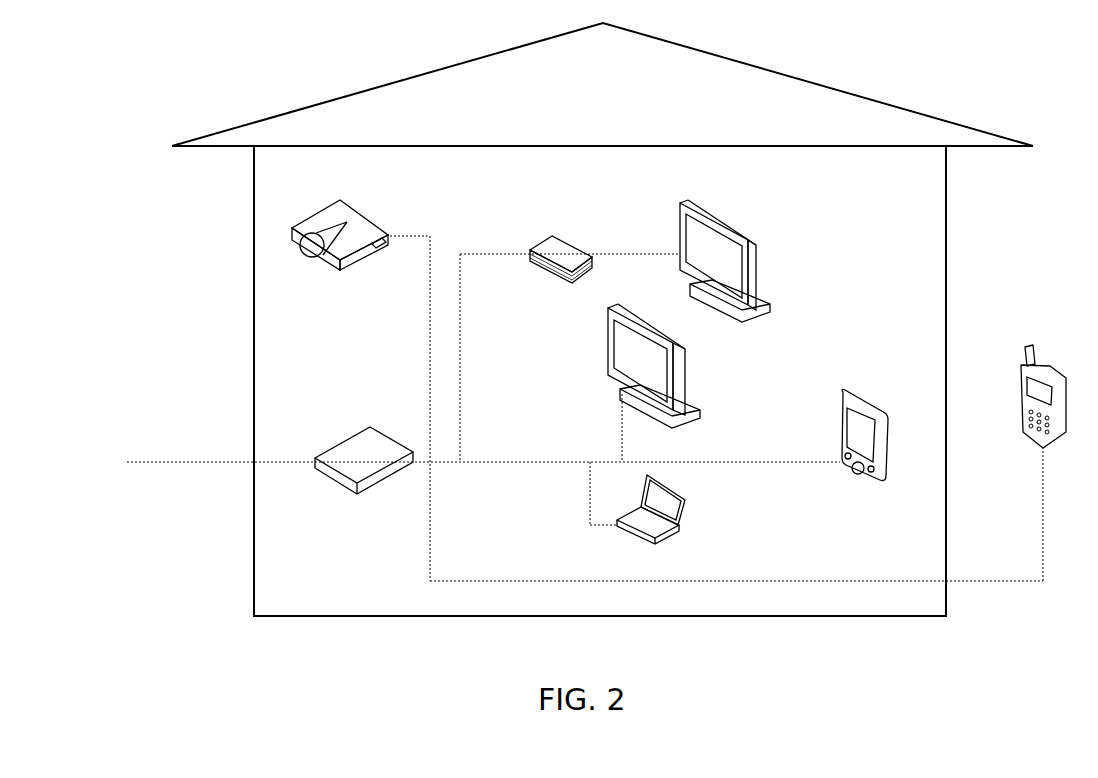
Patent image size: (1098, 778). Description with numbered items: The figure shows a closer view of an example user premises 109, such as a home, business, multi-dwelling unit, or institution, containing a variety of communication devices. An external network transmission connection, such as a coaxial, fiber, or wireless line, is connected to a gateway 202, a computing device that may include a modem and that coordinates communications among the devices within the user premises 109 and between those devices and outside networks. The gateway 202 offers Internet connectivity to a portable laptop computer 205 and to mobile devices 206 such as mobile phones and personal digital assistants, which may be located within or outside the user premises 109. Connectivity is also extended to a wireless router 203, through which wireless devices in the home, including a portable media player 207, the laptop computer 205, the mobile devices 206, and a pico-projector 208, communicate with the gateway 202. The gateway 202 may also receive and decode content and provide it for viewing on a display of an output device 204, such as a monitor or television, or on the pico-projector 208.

The user premises 109 is at (602, 319).
The gateway 202 is at (364, 475).
The wireless router 203 is at (551, 238).
The output device 204 is at (689, 328).
The portable laptop computer 205 is at (651, 522).
The mobile device 206 is at (1028, 369).
The portable media player 207 is at (865, 450).
The pico-projector 208 is at (340, 250).